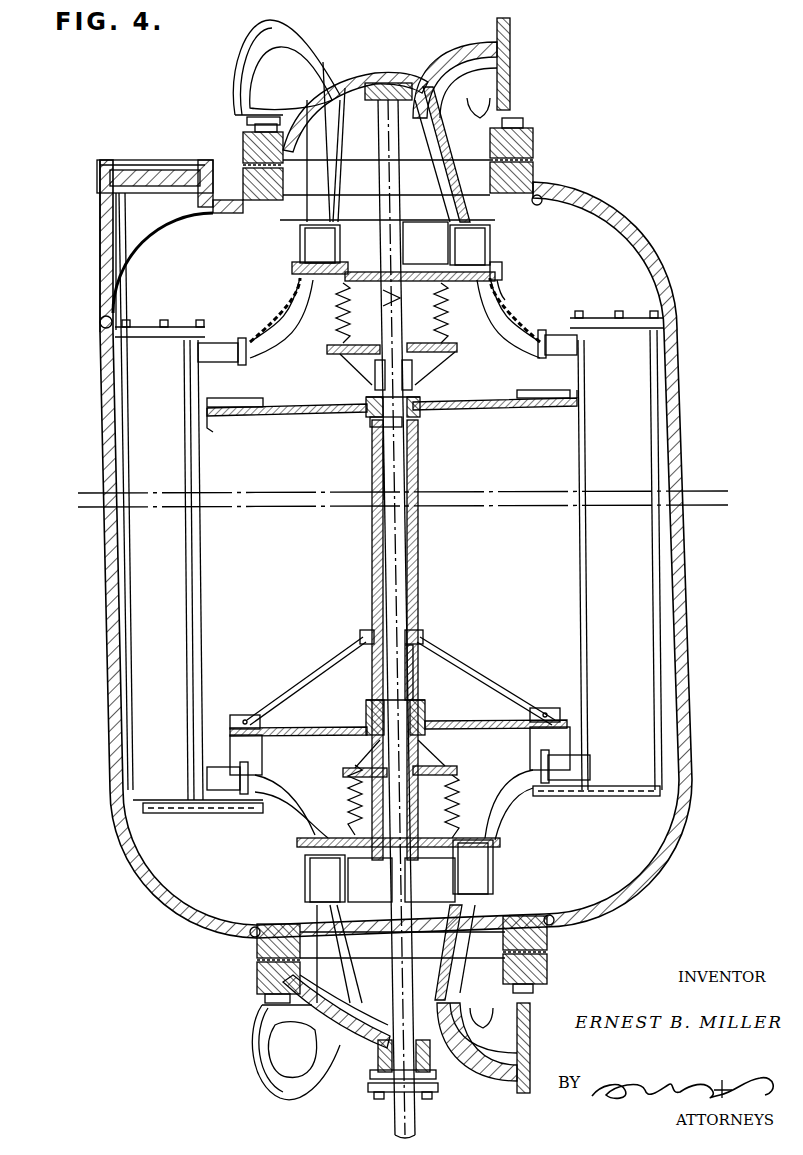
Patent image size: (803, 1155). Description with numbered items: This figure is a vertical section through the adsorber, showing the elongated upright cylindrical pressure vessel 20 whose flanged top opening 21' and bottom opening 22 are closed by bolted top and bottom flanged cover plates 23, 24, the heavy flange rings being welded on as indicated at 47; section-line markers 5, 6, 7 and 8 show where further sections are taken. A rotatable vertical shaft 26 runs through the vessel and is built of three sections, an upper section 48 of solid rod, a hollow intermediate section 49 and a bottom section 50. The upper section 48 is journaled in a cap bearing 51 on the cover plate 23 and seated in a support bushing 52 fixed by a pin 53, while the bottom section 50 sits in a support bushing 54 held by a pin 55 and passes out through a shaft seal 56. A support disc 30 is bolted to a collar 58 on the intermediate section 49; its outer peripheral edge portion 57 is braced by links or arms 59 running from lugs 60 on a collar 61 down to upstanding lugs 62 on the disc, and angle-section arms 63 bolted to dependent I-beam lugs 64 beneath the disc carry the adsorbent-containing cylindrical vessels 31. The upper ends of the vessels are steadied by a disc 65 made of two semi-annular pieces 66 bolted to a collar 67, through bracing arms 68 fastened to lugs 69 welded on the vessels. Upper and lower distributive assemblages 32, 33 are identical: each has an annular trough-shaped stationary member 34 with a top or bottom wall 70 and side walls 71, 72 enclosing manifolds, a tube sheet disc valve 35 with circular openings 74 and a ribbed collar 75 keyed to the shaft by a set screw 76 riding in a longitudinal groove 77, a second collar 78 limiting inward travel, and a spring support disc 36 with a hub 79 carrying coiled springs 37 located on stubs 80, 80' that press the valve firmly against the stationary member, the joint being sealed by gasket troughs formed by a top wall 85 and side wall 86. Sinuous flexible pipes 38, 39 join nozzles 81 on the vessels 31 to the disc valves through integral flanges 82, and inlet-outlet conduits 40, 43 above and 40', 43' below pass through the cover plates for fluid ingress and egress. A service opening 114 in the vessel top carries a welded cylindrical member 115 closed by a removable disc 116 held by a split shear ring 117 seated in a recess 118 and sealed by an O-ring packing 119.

The section line 5- 5 is at (75, 228).
The section line 6- 6 is at (120, 395).
The section line 7- 7 is at (160, 625).
The section line 8- 8 is at (278, 290).
The pressure vessel 20 is at (680, 398).
The flange 21' is at (261, 213).
The bottom opening 22 is at (310, 912).
The top cover plate 23 is at (400, 82).
The bottom cover plate 24 is at (358, 1045).
The vertical shaft 26 is at (418, 588).
The support disc 30 is at (460, 718).
The fluid treating material containing vessels 31 is at (180, 430).
The upper distributive assemblage 32 is at (520, 248).
The lower distributive assemblage 33 is at (290, 868).
The annular stationary member 34 is at (492, 242).
The tube sheet disc valve 35 is at (533, 848).
The spring support disc 36 is at (448, 355).
The coiled springs 37 is at (332, 354).
The upper flexible pipes 38 is at (540, 342).
The lower flexible pipes 39 is at (503, 810).
The inlet-outlet conduit 40 is at (461, 68).
The inlet-outlet conduit 40' is at (483, 1048).
The inlet-outlet conduit 43 is at (289, 72).
The inlet-outlet conduit 43' is at (296, 1067).
The welds 47 is at (548, 156).
The upper shaft section 48 is at (395, 212).
The intermediate shaft section 49 is at (410, 495).
The bottom shaft section 50 is at (430, 880).
The cap bearing 51 is at (378, 74).
The support bushing 52 is at (418, 448).
The pin 53 is at (420, 420).
The support bushing 54 is at (418, 672).
The pin 55 is at (418, 694).
The shaft seal 56 is at (430, 1103).
The plate 57 is at (335, 736).
The collar 58 is at (366, 710).
The supporting links or arms 59 is at (325, 668).
The lugs 60 is at (360, 636).
The collar 61 is at (425, 636).
The upstanding lugs 62 is at (246, 708).
The supporting links or arms 63 is at (178, 813).
The dependent lugs 64 is at (262, 750).
The disc 65 is at (463, 400).
The semi-annular flat pieces 66 is at (300, 416).
The collar 67 is at (370, 422).
The bracing strips or arms 68 is at (255, 416).
The lug 69 is at (590, 385).
The annular top wall 70 is at (300, 245).
The annular side wall 71 is at (300, 242).
The annular side wall 72 is at (320, 244).
The circular openings 74 is at (328, 330).
The collar 75 is at (364, 592).
The set screw 76 is at (400, 290).
The longitudinal groove 77 is at (426, 815).
The second collar 78 is at (403, 560).
The hub 79 is at (412, 362).
The stubs 80 is at (403, 581).
The stubs 80' is at (361, 254).
The nozzle 81 is at (215, 343).
The flange 82 is at (538, 826).
The annular top wall 85 is at (502, 257).
The annular side wall 86 is at (499, 292).
The opening 114 is at (228, 212).
The cylindrical member 115 is at (98, 262).
The closure disc 116 is at (200, 165).
The split shear ring 117 is at (150, 170).
The circumferential recess 118 is at (98, 168).
The O-ring packing 119 is at (98, 188).